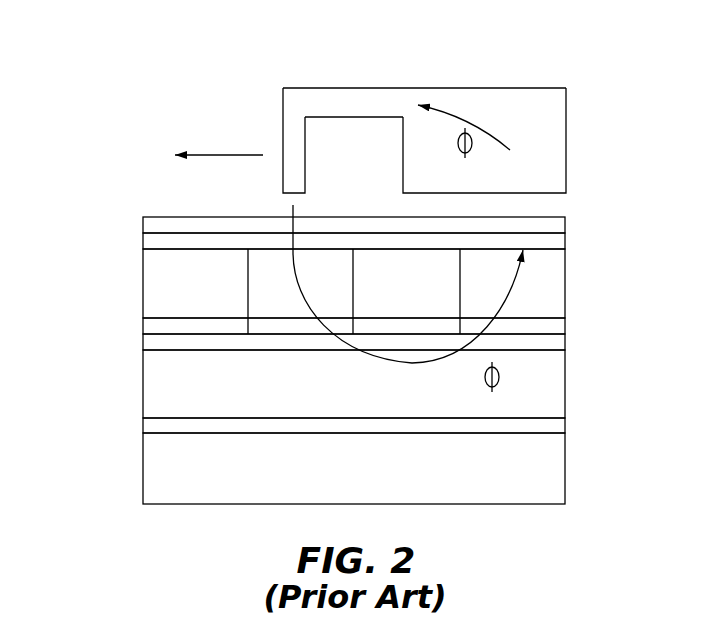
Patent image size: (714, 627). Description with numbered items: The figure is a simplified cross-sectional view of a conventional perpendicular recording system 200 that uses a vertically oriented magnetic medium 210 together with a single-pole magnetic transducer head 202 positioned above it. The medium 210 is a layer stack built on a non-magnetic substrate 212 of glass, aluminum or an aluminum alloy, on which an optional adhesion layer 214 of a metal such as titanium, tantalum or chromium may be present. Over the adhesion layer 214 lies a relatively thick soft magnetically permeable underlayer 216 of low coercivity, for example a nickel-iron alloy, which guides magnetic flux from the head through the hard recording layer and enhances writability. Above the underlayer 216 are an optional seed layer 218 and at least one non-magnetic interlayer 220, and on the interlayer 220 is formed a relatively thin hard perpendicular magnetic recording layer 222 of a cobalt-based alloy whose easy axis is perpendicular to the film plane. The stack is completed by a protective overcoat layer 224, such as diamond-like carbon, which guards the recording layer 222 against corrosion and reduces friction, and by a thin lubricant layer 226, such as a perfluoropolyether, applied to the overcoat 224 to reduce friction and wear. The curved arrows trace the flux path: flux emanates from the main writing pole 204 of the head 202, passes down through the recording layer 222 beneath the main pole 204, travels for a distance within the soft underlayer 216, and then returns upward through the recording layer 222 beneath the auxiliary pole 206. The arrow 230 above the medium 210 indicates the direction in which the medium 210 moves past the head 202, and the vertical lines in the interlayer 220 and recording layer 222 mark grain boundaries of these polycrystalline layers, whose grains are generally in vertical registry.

The perpendicular recording system 200 is at (455, 52).
The magnetic transducer head 202 is at (508, 87).
The main writing pole 204 is at (267, 110).
The auxiliary pole 206 is at (587, 110).
The magnetic medium 210 is at (120, 375).
The non-magnetic substrate 212 is at (567, 468).
The adhesion layer 214 is at (567, 427).
The soft magnetically permeable underlayer 216 is at (567, 383).
The seed layer 218 is at (567, 343).
The non-magnetic interlayer 220 is at (567, 325).
The hard perpendicular magnetic recording layer 222 is at (567, 284).
The protective overcoat layer 224 is at (567, 241).
The lubricant layer 226 is at (567, 225).
The arrow indicating direction of medium movement 230 is at (212, 155).